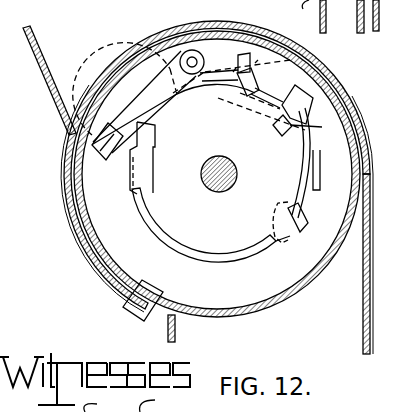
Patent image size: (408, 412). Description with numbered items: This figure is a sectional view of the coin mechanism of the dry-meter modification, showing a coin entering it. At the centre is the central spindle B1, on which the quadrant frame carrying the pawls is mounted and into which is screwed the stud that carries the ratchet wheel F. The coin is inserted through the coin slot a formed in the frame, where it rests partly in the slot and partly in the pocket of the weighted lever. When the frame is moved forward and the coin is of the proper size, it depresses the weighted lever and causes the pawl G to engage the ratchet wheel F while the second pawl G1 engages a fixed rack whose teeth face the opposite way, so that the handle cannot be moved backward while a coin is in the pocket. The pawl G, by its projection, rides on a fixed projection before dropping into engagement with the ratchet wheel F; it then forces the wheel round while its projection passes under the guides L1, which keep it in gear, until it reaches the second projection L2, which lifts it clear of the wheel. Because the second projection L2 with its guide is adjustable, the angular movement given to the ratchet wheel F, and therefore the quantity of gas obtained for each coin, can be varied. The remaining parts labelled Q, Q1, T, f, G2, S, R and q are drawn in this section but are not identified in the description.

The inner ring band Q is at (88, 198).
The outer ring band Q1 is at (360, 87).
The coin slot a is at (35, 44).
The bracket T is at (135, 307).
The ratchet wheel F is at (211, 206).
The central spindle B1 is at (226, 189).
The pawl block f is at (325, 57).
The pawl G is at (174, 101).
The lever end block G2 is at (92, 138).
The second pawl G1 is at (218, 98).
The spring S is at (233, 72).
The rod R is at (302, 88).
The pawl q is at (294, 68).
The guides L1 is at (320, 168).
The second projection L2 is at (302, 233).